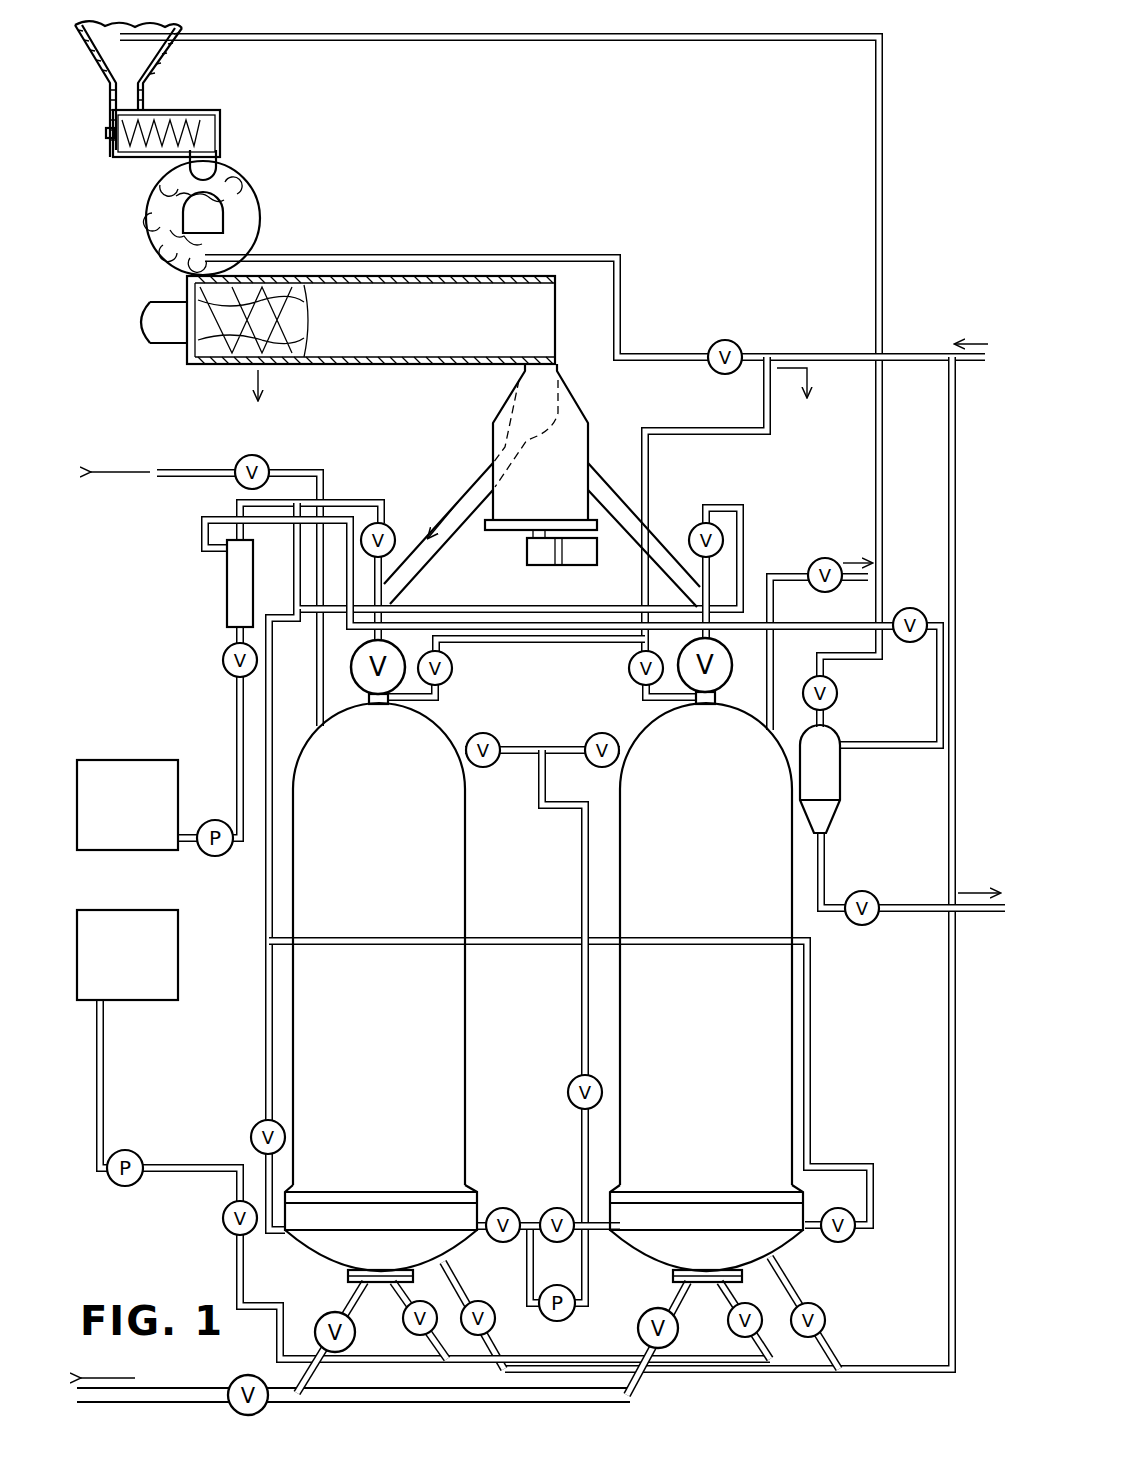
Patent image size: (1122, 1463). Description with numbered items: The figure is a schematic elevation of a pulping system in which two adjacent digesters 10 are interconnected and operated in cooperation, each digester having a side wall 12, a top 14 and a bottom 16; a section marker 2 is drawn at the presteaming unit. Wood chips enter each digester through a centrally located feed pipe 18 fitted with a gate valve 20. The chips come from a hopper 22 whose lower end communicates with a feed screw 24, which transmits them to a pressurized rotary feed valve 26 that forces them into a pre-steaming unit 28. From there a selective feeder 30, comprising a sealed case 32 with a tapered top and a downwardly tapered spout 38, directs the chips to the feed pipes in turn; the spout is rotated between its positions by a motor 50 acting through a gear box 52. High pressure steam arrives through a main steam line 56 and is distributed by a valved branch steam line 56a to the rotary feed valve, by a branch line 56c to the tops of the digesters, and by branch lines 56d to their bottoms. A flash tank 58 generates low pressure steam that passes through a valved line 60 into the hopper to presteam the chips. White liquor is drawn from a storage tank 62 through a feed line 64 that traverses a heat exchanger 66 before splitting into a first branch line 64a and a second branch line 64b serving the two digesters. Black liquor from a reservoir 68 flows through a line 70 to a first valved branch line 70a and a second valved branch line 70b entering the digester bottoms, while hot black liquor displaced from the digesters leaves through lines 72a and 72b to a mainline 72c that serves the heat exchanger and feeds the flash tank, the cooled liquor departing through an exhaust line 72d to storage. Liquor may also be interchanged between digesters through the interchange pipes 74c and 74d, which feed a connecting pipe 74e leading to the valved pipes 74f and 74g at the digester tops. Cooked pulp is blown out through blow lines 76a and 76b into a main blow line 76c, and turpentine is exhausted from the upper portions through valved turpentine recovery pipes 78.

The section line 2- 2 is at (533, 386).
The digester 10 is at (614, 855).
The side wall 12 is at (600, 983).
The top 14 is at (320, 748).
The bottom 16 is at (320, 1250).
The feed pipe 18 is at (475, 488).
The gate valve 20 is at (357, 655).
The hopper 22 is at (101, 74).
The feed screw 24 is at (158, 113).
The rotary feed valve 26 is at (238, 203).
The pre-steaming unit 28 is at (410, 345).
The selective feeder 30 is at (598, 428).
The sealed case 32 is at (502, 408).
The spout 38 is at (503, 443).
The motor 50 is at (587, 566).
The gear box 52 is at (527, 551).
The main steam line 56 is at (973, 362).
The branch steam line 56a is at (442, 255).
The branch steam line 56c is at (650, 478).
The branch steam line 56d is at (954, 570).
The flash tank 58 is at (826, 771).
The valved line 60 is at (883, 488).
The storage tank 62 is at (138, 758).
The feed line 64 is at (238, 753).
The first branch line 64a is at (373, 501).
The second branch line 64b is at (740, 509).
The heat exchanger 66 is at (236, 576).
The reservoir 68 is at (180, 942).
The line 70 is at (100, 1094).
The first valved branch line 70a is at (404, 1297).
The second valved branch line 70b is at (735, 1293).
The line 72a is at (266, 999).
The line 72b is at (810, 1003).
The mainline 72c is at (204, 533).
The exhaust line 72d is at (988, 911).
The interchange pipe 74c is at (485, 1216).
The interchange pipe 74d is at (578, 1218).
The connecting pipe 74e is at (580, 904).
The valved pipe 74f is at (514, 746).
The valved pipe 74g is at (617, 742).
The blow line 76a is at (349, 1292).
The blow line 76b is at (672, 1292).
The main blow line 76c is at (152, 1387).
The turpentine recovery pipe 78 is at (170, 468).